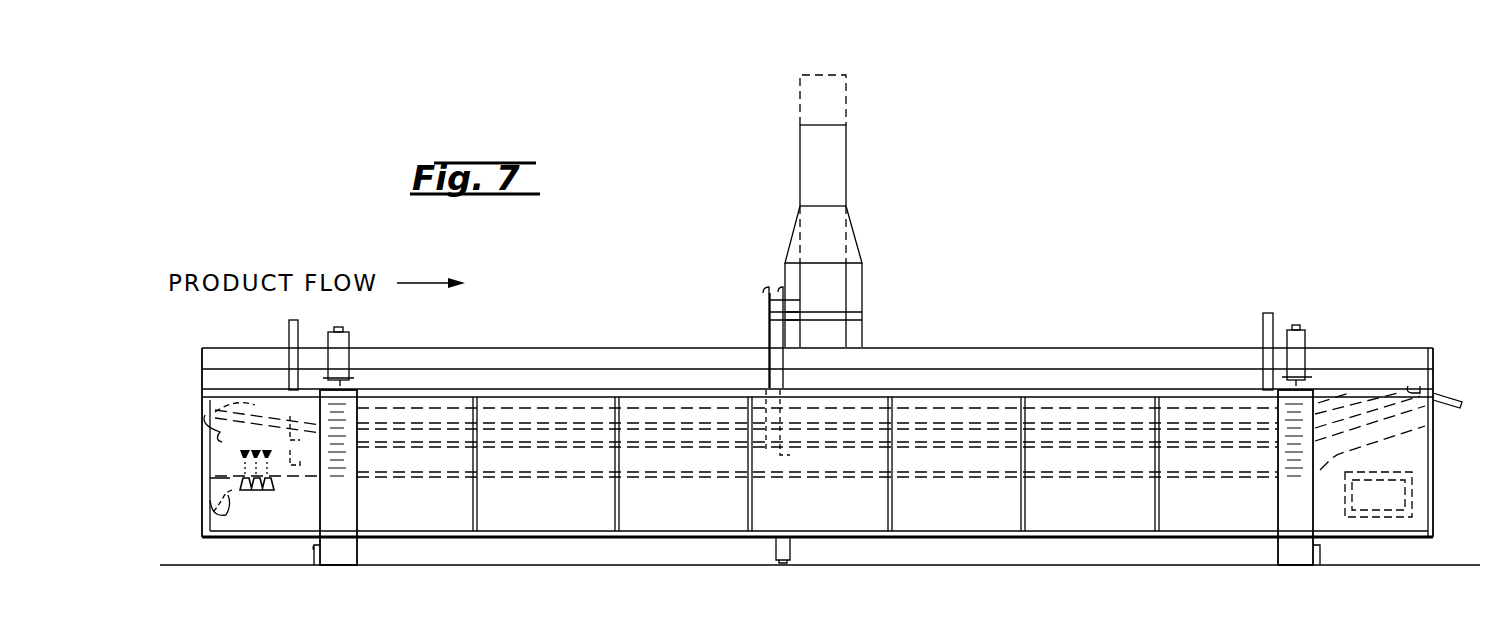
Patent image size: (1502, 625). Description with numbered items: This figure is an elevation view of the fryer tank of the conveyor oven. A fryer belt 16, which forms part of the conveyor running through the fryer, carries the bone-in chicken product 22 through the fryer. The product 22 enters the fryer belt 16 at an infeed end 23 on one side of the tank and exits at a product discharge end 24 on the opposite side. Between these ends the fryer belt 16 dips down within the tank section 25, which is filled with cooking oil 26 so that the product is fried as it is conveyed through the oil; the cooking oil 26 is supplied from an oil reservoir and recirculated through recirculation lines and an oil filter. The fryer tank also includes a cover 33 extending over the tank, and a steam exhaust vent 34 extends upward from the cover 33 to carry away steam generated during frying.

The fryer belt 16 is at (222, 395).
The bone-in chicken product 22 is at (253, 400).
The infeed end 23 is at (220, 412).
The product discharge end 24 is at (1448, 372).
The tank section 25 is at (672, 492).
The cooking oil 26 is at (556, 508).
The cover 33 is at (1052, 347).
The steam exhaust vent 34 is at (862, 152).